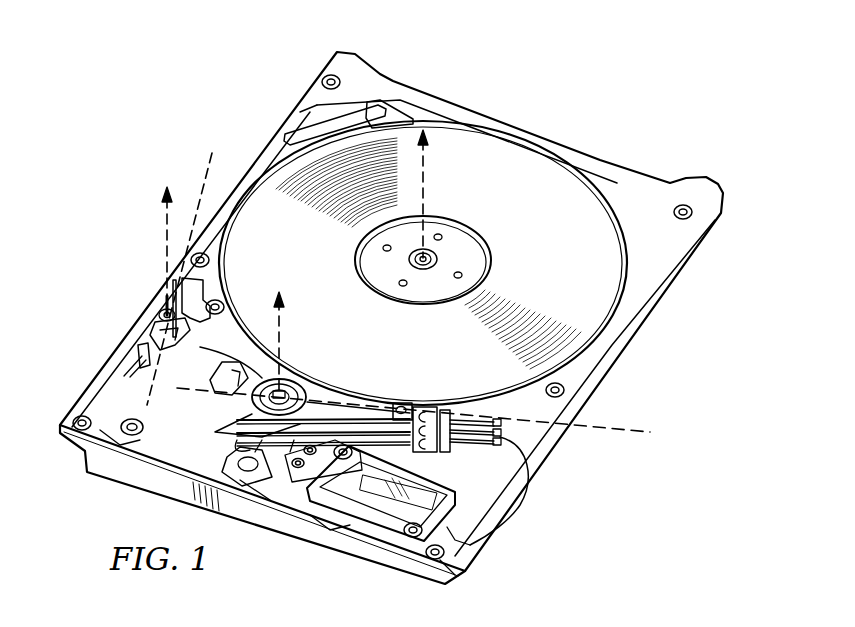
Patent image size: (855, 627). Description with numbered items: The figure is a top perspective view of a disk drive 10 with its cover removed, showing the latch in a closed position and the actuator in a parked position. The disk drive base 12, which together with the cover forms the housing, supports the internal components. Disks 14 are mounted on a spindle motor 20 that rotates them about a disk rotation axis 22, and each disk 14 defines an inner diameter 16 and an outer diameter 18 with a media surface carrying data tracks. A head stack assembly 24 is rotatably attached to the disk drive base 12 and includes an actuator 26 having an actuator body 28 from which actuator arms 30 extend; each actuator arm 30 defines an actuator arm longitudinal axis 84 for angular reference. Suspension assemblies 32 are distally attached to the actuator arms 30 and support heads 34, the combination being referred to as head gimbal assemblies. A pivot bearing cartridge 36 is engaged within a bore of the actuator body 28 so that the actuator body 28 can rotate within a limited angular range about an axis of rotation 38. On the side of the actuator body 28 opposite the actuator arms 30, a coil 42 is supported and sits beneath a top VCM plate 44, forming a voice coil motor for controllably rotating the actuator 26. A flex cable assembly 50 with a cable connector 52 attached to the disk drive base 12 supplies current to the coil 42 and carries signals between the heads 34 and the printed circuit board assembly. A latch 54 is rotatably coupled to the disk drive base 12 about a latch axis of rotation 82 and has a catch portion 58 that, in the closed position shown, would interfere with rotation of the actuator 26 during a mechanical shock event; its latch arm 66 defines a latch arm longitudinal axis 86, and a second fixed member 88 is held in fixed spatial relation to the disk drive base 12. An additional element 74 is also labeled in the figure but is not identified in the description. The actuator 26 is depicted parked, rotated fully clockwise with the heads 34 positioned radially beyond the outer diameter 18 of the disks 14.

The disk drive 10 is at (266, 101).
The disk drive base 12 is at (646, 183).
The disk 14 is at (522, 215).
The inner diameter 16 is at (491, 257).
The outer diameter 18 is at (576, 158).
The spindle motor 20 is at (464, 243).
The disk rotation axis 22 is at (428, 181).
The head stack assembly 24 is at (252, 434).
The actuator 26 is at (278, 414).
The actuator body 28 is at (293, 414).
The actuator arm 30 is at (392, 405).
The suspension assembly 32 is at (468, 413).
The head 34 is at (484, 418).
The pivot bearing cartridge 36 is at (289, 386).
The axis of rotation 38 is at (285, 334).
The coil 42 is at (229, 387).
The top VCM plate 44 is at (178, 414).
The flex cable assembly 50 is at (355, 492).
The cable connector 52 is at (436, 492).
The latch 54 is at (155, 321).
The catch portion 58 is at (131, 368).
The latch arm 66 is at (150, 328).
The latch bracket 74 is at (170, 299).
The latch axis of rotation 82 is at (164, 222).
The actuator arm longitudinal axis 84 is at (627, 431).
The latch arm longitudinal axis 86 is at (204, 168).
The second fixed member 88 is at (137, 352).